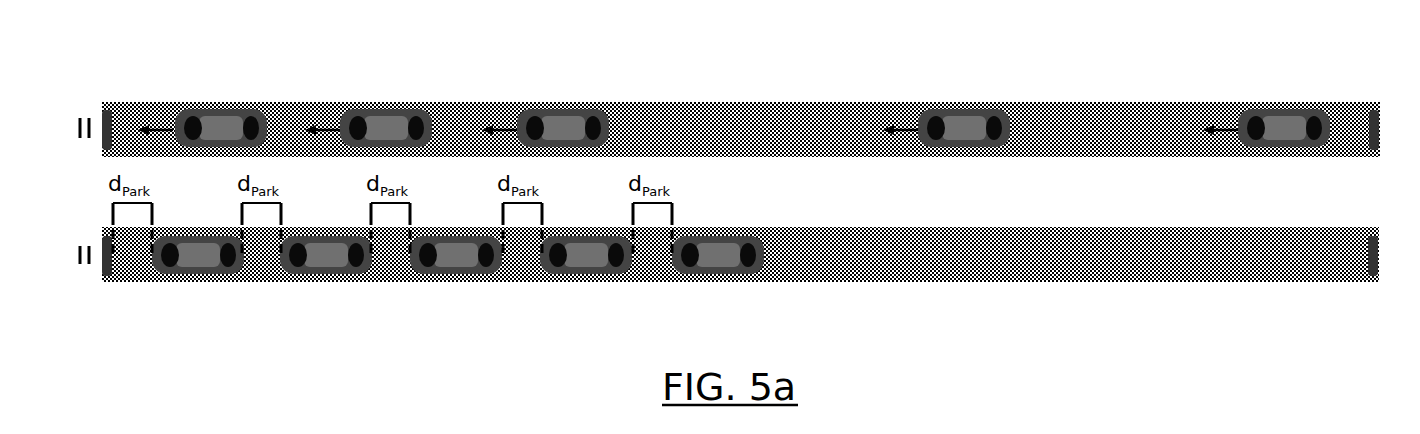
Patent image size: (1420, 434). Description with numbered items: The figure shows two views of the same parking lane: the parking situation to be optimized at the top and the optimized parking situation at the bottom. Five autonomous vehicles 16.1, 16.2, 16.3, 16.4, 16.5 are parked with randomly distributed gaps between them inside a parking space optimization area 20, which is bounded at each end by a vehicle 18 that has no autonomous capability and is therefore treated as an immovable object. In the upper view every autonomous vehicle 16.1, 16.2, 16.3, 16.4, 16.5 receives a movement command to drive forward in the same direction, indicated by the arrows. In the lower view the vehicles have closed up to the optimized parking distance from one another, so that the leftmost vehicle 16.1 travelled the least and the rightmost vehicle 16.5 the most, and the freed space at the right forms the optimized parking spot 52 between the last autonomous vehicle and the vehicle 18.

The autonomous vehicle 16.1 is at (218, 118).
The autonomous vehicle 16.2 is at (397, 117).
The autonomous vehicle 16.3 is at (580, 117).
The autonomous vehicle 16.4 is at (970, 118).
The autonomous vehicle 16.5 is at (1297, 117).
The vehicle 18 is at (104, 118).
The parking space optimization area 20 is at (176, 83).
The optimized parking spot 52 is at (1101, 240).